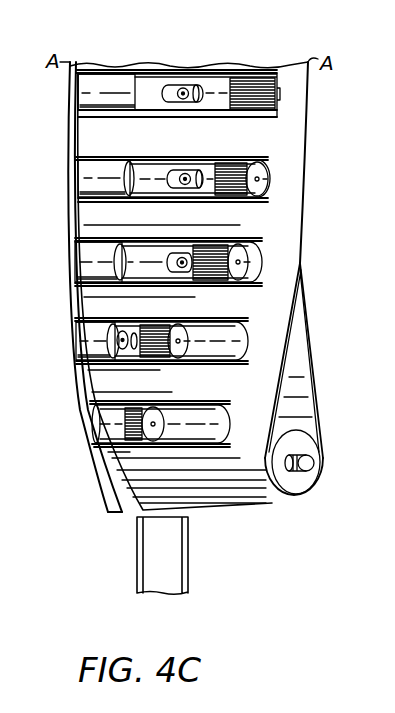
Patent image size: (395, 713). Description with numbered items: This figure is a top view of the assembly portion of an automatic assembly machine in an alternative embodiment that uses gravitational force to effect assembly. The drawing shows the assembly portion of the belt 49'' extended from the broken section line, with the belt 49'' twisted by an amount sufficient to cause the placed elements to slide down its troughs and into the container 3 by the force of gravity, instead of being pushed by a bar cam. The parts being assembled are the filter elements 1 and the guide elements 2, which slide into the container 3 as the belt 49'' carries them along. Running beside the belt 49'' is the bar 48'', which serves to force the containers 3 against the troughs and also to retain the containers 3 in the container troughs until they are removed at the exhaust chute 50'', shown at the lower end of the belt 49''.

The filter element 1 is at (250, 76).
The guide element 2 is at (198, 86).
The container 3 is at (117, 83).
The bar 48'' is at (142, 287).
The belt 49'' is at (315, 278).
The exhaust chute 50'' is at (130, 555).